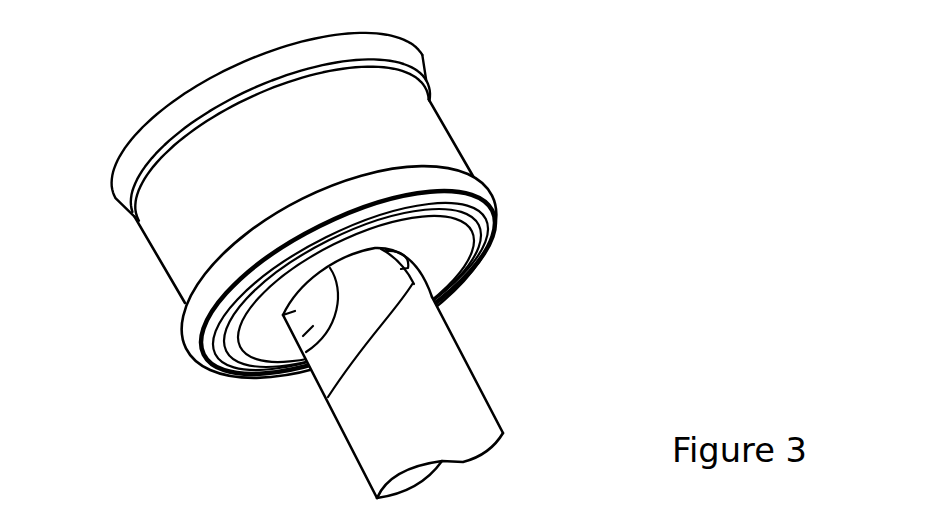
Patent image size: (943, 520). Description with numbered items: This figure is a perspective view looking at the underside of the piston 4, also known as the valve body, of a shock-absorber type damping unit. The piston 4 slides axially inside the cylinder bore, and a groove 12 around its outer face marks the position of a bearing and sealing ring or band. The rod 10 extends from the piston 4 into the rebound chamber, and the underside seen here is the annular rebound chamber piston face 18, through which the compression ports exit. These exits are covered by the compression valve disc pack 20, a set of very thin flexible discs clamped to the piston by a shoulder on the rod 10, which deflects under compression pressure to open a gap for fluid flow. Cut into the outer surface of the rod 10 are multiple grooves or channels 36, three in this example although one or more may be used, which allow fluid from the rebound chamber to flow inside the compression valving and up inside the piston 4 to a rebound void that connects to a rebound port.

The piston 4 is at (356, 265).
The rod 10 is at (443, 387).
The groove 12 is at (160, 263).
The annular rebound chamber piston face 18 is at (503, 223).
The compression valve disc pack 20 is at (487, 253).
The groove or channel 36 is at (413, 285).